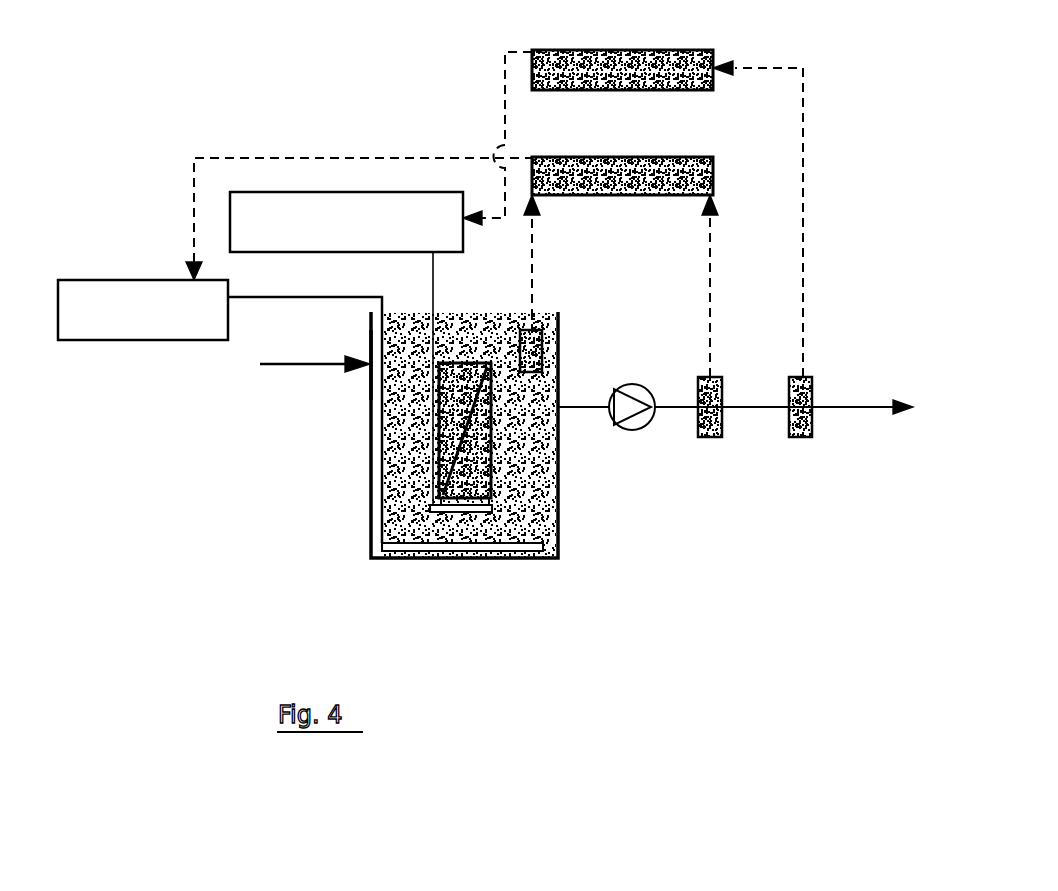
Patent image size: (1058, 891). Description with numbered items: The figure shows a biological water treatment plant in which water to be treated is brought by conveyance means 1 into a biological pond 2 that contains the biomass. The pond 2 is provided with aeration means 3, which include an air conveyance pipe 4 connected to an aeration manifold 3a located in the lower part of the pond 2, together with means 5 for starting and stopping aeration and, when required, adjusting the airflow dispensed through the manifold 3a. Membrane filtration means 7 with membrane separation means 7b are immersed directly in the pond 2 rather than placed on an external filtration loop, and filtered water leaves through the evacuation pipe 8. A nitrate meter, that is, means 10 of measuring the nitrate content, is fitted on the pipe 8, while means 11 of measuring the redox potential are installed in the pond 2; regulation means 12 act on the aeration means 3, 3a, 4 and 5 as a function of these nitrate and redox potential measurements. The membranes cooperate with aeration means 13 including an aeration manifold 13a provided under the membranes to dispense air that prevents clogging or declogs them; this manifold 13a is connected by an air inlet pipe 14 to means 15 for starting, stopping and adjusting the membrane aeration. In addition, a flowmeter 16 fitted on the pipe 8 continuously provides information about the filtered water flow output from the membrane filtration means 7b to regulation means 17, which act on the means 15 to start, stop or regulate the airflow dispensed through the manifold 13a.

The conveyance means 1 is at (285, 364).
The biological pond 2 is at (560, 463).
The aeration means 3 is at (418, 550).
The aeration manifold 3a is at (387, 540).
The air conveyance pipe 4 is at (382, 472).
The means of starting and stopping aeration 5 is at (178, 307).
The membrane filtration means 7 is at (456, 363).
The membrane separation means 7b is at (478, 423).
The evacuation pipe 8 is at (680, 404).
The means of measuring the nitrate content 10 is at (721, 388).
The means of measuring the redox potential 11 is at (543, 338).
The regulation means 12 is at (657, 177).
The aeration means 13 is at (458, 510).
The aeration manifold 13a is at (490, 492).
The air inlet pipe 14 is at (432, 422).
The means of starting and stopping aeration of the membrane 15 is at (285, 213).
The flowmeter 16 is at (789, 432).
The regulation means 17 is at (657, 67).